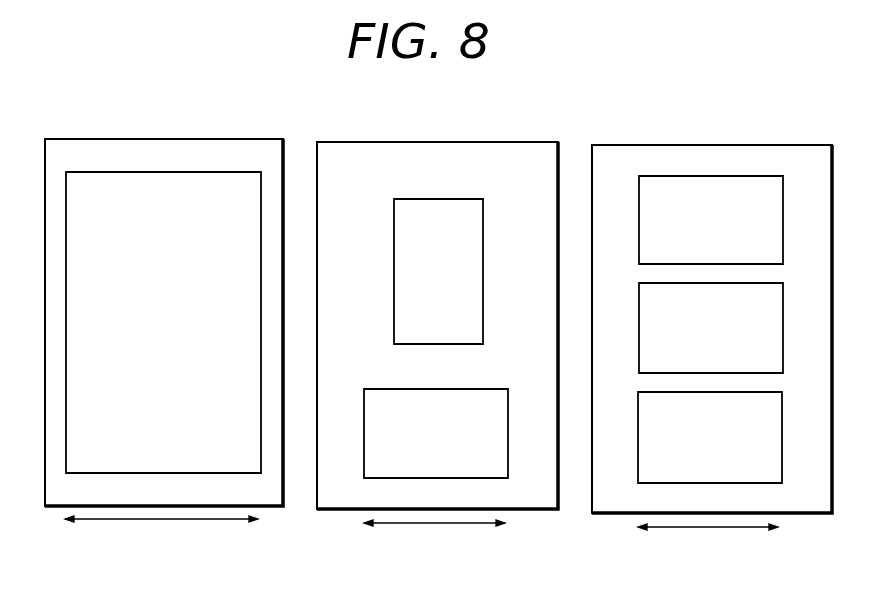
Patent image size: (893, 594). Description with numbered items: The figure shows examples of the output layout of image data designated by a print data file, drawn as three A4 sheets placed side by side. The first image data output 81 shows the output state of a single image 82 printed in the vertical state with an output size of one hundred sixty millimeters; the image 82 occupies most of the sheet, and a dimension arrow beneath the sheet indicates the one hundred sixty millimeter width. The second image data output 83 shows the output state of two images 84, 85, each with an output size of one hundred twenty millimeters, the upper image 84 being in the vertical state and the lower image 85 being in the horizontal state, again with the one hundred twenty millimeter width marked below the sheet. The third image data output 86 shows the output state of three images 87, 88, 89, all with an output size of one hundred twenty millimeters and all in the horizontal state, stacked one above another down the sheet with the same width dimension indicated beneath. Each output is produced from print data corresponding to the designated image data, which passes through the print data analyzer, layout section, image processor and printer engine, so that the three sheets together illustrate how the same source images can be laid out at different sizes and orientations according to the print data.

The first image data output 81 is at (256, 139).
The image 82 is at (65, 191).
The second image data output 83 is at (540, 142).
The image 84 is at (484, 221).
The image 85 is at (509, 404).
The third image data output 86 is at (802, 145).
The image 87 is at (784, 204).
The image 88 is at (784, 303).
The image 89 is at (783, 408).